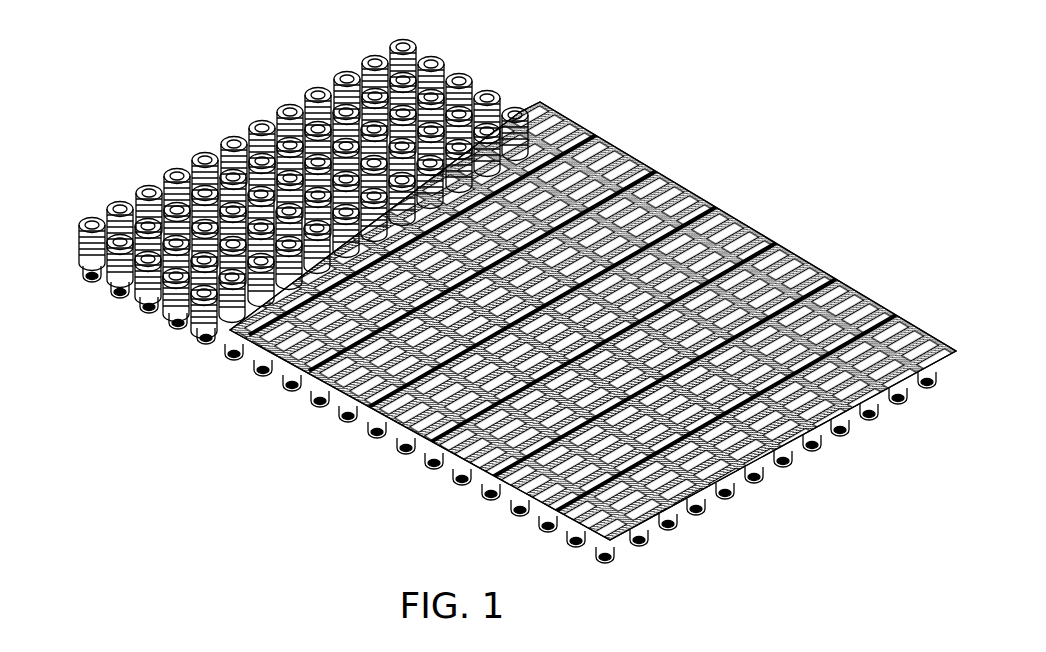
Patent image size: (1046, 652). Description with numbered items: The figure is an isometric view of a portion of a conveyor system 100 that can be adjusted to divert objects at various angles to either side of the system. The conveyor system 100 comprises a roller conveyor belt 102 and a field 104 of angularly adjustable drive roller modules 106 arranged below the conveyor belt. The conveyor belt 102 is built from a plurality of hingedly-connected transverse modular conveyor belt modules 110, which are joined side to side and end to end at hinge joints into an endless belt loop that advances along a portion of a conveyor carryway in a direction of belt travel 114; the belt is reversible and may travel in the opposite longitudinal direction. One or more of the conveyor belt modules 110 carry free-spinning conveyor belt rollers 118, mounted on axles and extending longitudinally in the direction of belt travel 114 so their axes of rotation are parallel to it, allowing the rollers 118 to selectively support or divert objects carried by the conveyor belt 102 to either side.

The conveyor system 100 is at (666, 62).
The roller conveyor belt 102 is at (593, 321).
The field of angularly adjustable drive roller modules 104 is at (398, 27).
The drive roller module 106 is at (140, 306).
The conveyor belt module 110 is at (800, 258).
The direction of belt travel 114 is at (299, 433).
The conveyor belt roller 118 is at (460, 450).